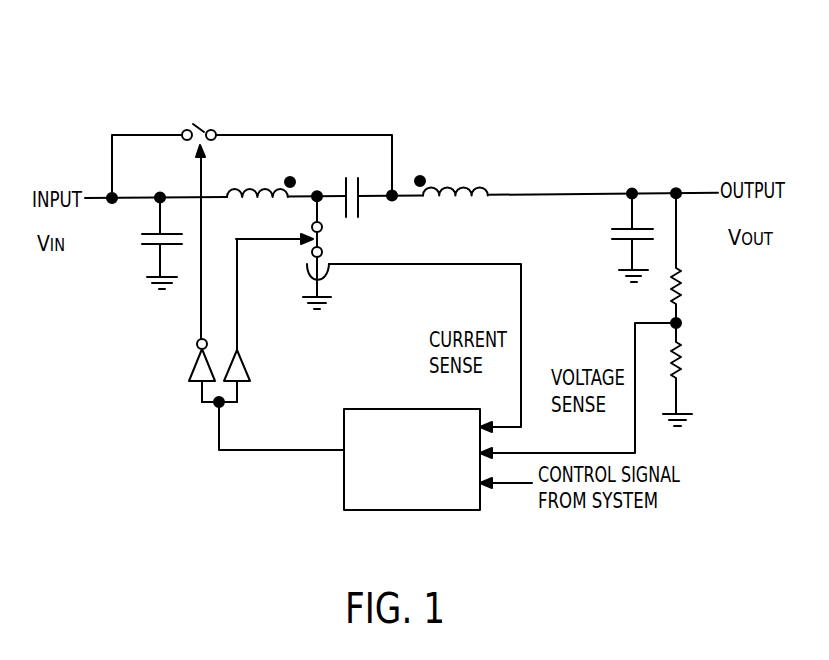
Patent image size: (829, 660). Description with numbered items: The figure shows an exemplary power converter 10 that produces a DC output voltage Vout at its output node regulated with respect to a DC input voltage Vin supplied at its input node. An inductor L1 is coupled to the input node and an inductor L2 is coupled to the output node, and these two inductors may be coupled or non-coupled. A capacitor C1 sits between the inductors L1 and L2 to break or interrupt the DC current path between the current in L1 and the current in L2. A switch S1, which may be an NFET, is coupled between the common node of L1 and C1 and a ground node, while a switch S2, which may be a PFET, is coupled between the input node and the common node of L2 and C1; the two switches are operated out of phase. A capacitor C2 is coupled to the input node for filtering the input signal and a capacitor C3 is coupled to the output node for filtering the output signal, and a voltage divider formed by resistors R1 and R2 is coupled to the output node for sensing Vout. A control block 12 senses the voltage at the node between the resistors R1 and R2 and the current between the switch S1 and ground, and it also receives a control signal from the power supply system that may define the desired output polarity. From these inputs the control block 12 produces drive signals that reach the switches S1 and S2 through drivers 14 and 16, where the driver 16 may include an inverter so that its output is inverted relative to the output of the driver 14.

The power converter 10 is at (492, 80).
The control block 12 is at (408, 409).
The driver 14 is at (243, 361).
The driver 16 is at (192, 367).
The switch S1 is at (325, 252).
The switch S2 is at (252, 145).
The capacitor C1 is at (352, 182).
The capacitor C2 is at (148, 243).
The capacitor C3 is at (620, 238).
The inductor L1 is at (257, 179).
The inductor L2 is at (455, 177).
The resistor R1 is at (690, 258).
The resistor R2 is at (686, 374).